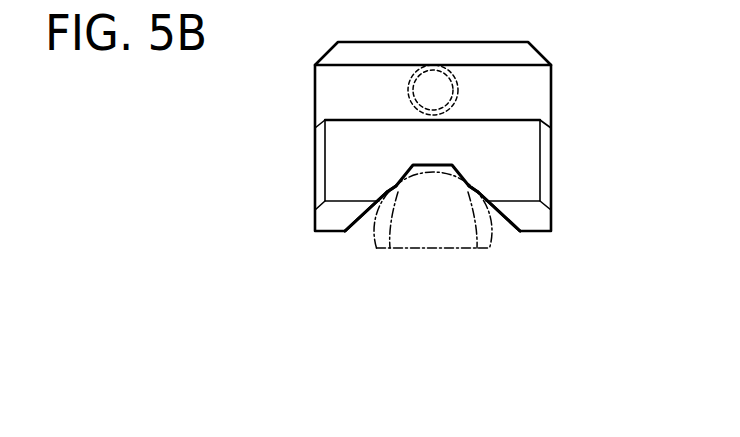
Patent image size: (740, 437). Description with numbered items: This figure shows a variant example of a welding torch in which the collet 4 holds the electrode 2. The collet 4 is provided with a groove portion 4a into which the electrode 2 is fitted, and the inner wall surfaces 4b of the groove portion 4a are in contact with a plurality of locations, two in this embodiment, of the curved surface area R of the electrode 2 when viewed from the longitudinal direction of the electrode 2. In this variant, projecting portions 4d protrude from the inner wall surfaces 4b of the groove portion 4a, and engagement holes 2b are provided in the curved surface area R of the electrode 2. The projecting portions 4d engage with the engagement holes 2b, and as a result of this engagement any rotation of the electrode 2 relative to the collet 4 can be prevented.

The collet 4 is at (578, 72).
The groove portion 4a is at (505, 236).
The inner wall surfaces 4b is at (357, 220).
The projecting portions 4d is at (384, 184).
The electrode 2 is at (438, 232).
The engagement holes 2b is at (390, 250).
The curved surface area R is at (446, 178).